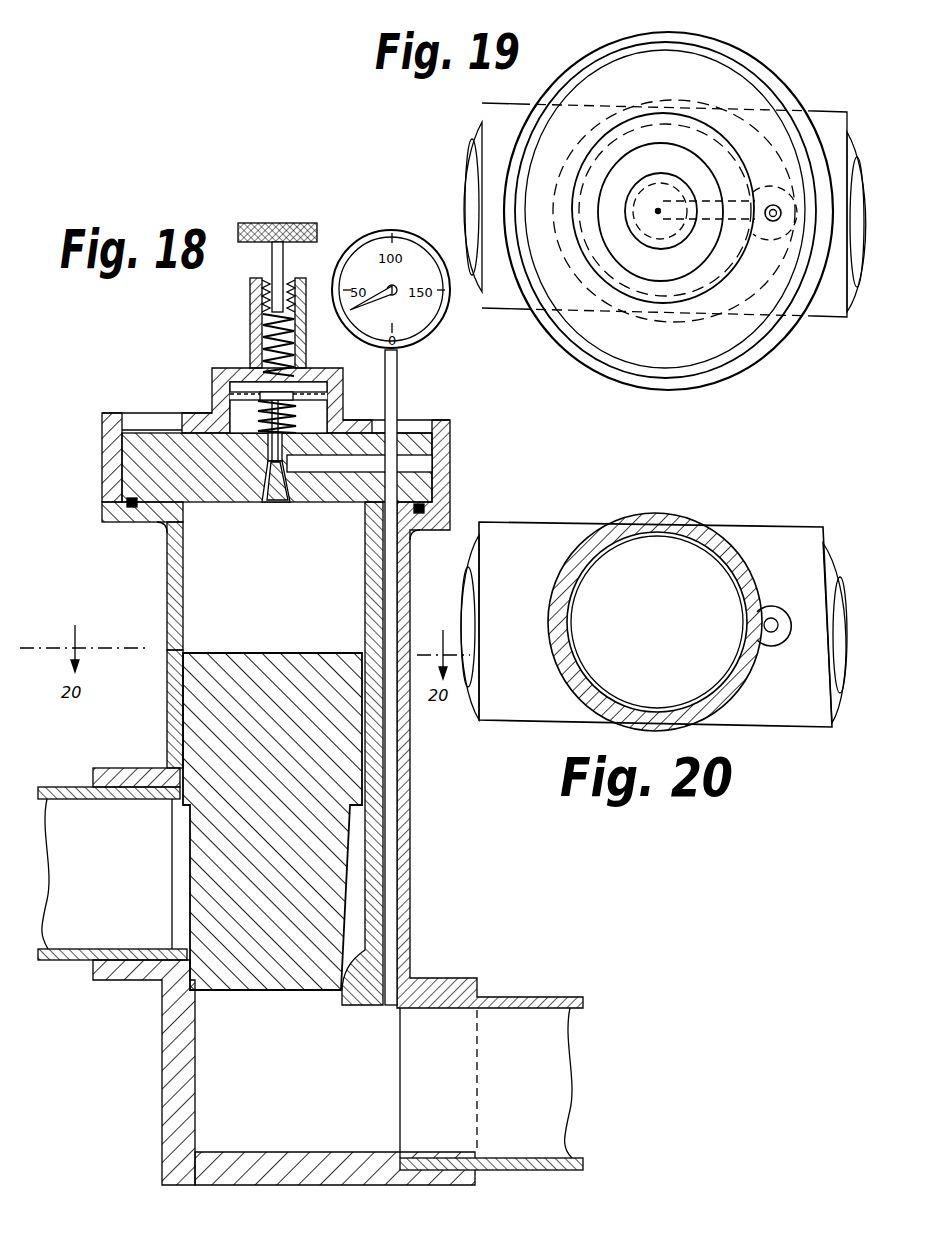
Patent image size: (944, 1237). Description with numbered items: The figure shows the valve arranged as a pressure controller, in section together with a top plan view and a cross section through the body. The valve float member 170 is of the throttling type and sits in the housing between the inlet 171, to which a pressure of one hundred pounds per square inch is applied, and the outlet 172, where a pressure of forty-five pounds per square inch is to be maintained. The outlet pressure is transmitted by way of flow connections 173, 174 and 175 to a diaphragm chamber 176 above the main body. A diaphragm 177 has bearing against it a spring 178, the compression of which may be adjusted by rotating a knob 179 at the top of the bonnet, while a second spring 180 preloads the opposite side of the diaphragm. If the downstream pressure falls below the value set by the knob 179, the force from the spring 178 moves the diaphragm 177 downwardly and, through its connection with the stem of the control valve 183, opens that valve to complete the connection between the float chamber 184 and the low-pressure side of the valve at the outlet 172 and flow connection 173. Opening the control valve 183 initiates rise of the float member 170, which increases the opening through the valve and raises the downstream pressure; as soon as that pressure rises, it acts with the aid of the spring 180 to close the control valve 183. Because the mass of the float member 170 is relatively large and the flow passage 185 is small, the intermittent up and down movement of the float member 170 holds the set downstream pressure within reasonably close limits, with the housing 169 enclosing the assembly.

In FIG. 18, the valve housing 169 is at (163, 1104).
In FIG. 20, the valve housing 169 is at (513, 535).
In FIG. 18, the valve float member 170 is at (282, 653).
In FIG. 20, the valve float member 170 is at (657, 622).
In FIG. 18, the inlet 171 is at (73, 963).
In FIG. 19, the inlet 171 is at (472, 132).
In FIG. 20, the inlet 171 is at (472, 690).
In FIG. 18, the outlet 172 is at (573, 1023).
In FIG. 19, the outlet 172 is at (855, 130).
In FIG. 20, the outlet 172 is at (835, 543).
In FIG. 18, the flow connection 173 is at (387, 998).
In FIG. 20, the flow connection 173 is at (773, 618).
In FIG. 18, the flow connection 174 is at (333, 467).
In FIG. 18, the flow connection 175 is at (323, 413).
In FIG. 18, the diaphragm chamber 176 is at (237, 410).
In FIG. 18, the diaphragm 177 is at (250, 368).
In FIG. 18, the spring 178 is at (263, 336).
In FIG. 18, the knob 179 is at (286, 250).
In FIG. 19, the knob 179 is at (672, 178).
In FIG. 18, the second spring 180 is at (262, 417).
In FIG. 18, the control valve 183 is at (280, 488).
In FIG. 18, the float chamber 184 is at (195, 582).
In FIG. 18, the flow passage 185 is at (182, 708).
In FIG. 20, the flow passage 185 is at (592, 686).